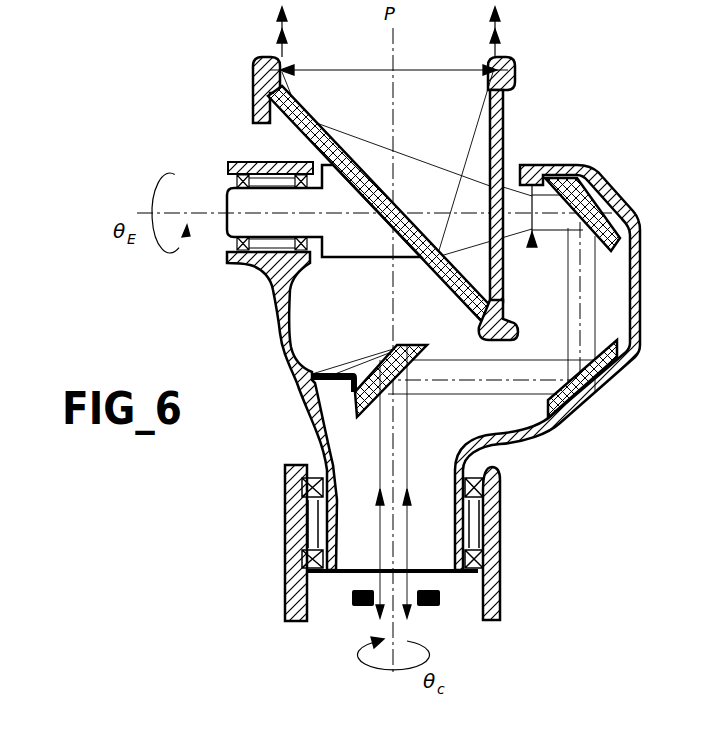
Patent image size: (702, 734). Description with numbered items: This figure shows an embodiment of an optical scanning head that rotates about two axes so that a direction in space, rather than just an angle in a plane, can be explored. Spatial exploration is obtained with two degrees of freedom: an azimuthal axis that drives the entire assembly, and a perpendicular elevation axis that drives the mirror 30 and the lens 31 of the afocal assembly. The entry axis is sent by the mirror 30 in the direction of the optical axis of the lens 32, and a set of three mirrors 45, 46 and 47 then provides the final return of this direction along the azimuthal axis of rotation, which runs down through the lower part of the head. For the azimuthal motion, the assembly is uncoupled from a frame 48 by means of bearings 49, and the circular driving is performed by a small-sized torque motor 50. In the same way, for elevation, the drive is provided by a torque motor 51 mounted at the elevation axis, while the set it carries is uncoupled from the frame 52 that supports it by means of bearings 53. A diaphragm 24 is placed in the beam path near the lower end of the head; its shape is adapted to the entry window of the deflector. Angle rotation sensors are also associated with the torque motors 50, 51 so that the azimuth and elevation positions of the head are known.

The diaphragm 24 is at (427, 572).
The mirror 30 is at (410, 213).
The lens 31 is at (430, 69).
The lens 32 is at (535, 250).
The mirror 45 is at (605, 187).
The mirror 46 is at (610, 383).
The mirror 47 is at (407, 343).
The frame 48 is at (490, 528).
The bearings 49 is at (302, 463).
The torque motor 50 is at (287, 512).
The torque motor 51 is at (277, 163).
The frame 52 is at (273, 323).
The bearings 53 is at (233, 180).